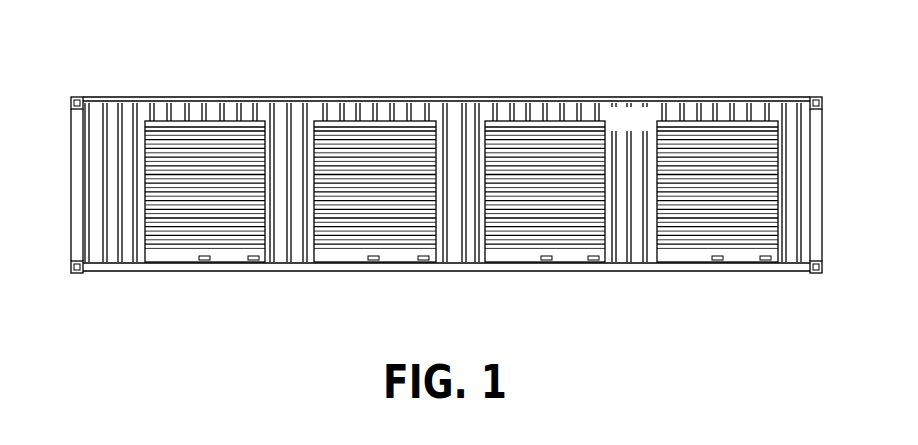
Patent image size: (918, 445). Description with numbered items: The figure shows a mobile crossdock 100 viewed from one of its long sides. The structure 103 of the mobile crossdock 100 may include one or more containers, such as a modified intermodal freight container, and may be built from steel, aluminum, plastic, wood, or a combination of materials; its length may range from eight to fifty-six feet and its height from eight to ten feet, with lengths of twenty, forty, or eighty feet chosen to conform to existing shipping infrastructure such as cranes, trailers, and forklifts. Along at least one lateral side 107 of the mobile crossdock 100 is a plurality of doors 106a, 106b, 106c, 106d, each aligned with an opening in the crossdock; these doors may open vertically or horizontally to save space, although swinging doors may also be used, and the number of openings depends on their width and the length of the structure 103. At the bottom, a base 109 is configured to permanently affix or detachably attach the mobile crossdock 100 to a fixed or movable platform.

The mobile crossdock 100 is at (753, 97).
The structure 103 is at (145, 106).
The door 106a is at (172, 263).
The door 106b is at (340, 263).
The door 106c is at (518, 263).
The door 106d is at (682, 263).
The lateral side 107 is at (646, 128).
The base 109 is at (100, 272).